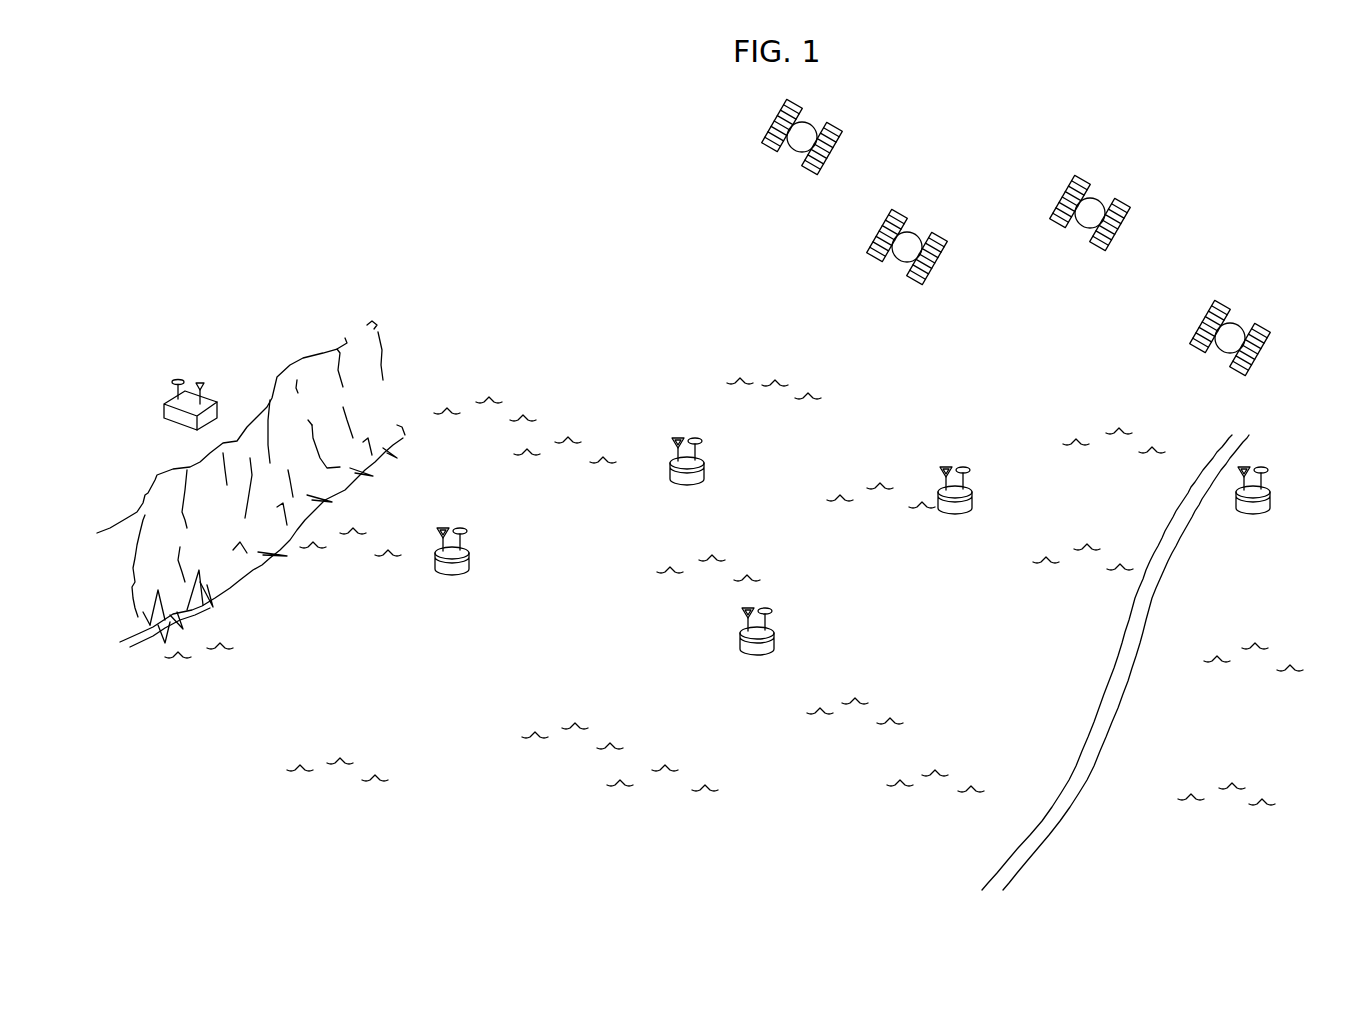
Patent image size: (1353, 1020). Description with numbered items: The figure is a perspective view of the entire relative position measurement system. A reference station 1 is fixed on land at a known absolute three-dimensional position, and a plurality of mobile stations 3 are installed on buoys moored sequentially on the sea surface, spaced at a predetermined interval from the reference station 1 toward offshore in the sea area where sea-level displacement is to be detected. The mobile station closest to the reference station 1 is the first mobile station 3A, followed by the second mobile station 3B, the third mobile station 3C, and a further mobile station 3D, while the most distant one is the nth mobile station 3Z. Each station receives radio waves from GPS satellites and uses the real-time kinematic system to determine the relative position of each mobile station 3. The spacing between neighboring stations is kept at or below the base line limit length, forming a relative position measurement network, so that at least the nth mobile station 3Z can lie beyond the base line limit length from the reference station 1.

The reference station 1 is at (226, 381).
The mobile station 3 is at (893, 556).
The first mobile station 3A is at (502, 579).
The second mobile station 3B is at (725, 472).
The third mobile station 3C is at (803, 646).
The fourth mobile station 3D is at (996, 509).
The nth mobile station 3Z is at (1294, 505).